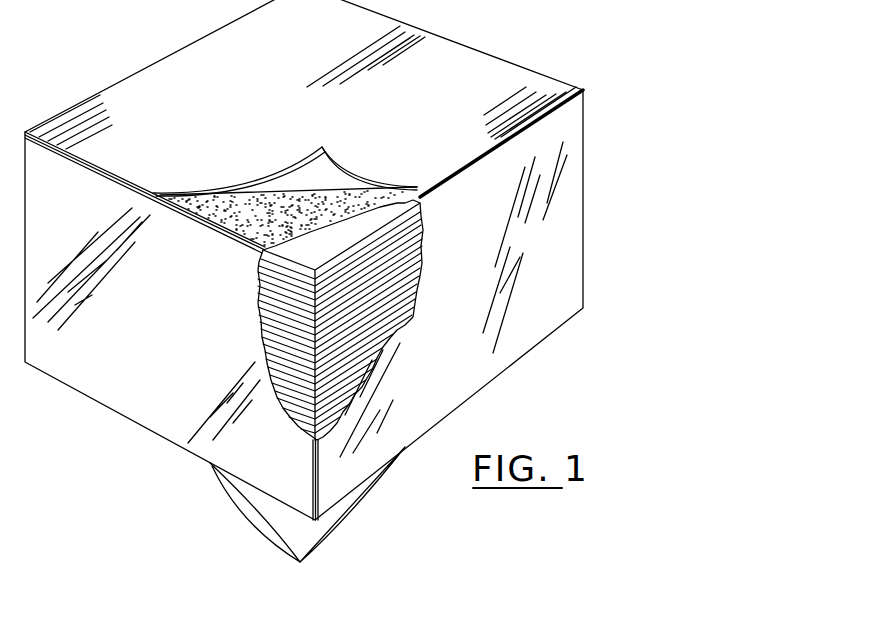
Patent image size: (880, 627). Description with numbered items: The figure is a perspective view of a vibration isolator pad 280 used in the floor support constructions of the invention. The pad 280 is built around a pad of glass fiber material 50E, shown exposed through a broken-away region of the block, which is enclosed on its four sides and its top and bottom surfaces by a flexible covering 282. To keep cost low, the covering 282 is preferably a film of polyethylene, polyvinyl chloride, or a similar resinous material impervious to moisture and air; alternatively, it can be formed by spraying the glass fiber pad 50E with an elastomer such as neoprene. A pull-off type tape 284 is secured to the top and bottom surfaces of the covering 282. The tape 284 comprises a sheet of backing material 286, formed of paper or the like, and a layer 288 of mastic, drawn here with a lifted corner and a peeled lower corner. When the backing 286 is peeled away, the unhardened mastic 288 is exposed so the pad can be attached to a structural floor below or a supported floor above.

The isolator pad 280 is at (443, 46).
The flexible covering 282 is at (570, 188).
The pull-off type tape 284 is at (222, 113).
The sheet of backing material 286 is at (331, 158).
The layer of mastic 288 is at (265, 228).
The pad of glass fiber material 50E is at (373, 322).